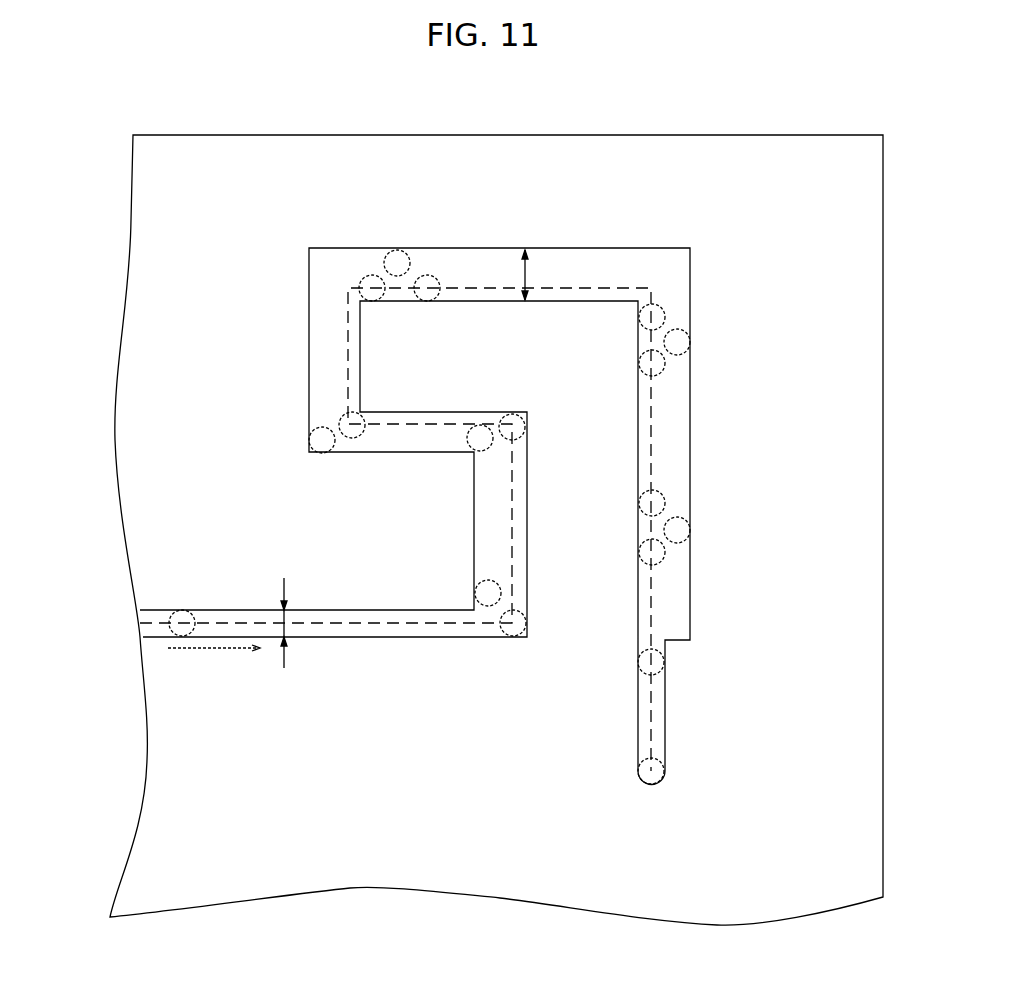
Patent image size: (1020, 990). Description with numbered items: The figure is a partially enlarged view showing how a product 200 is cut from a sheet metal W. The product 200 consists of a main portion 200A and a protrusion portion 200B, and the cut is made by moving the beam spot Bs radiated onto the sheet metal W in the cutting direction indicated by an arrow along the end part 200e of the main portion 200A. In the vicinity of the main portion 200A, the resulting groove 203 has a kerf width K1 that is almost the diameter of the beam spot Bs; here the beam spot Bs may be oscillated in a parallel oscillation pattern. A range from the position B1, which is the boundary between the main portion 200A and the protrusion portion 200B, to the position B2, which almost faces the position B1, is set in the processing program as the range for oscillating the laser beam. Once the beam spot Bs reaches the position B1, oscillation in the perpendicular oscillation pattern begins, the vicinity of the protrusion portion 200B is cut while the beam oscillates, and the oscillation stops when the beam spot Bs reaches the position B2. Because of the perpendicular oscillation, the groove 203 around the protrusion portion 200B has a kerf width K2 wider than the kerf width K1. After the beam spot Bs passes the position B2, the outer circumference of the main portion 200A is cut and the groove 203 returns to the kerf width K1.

The sheet metal W is at (652, 135).
The product 200 is at (170, 780).
The main portion 200A is at (170, 693).
The protrusion portion 200B is at (590, 420).
The end part 200e is at (240, 635).
The groove 203 is at (308, 609).
The kerf width K1 is at (243, 623).
The kerf width K2 is at (540, 275).
The position B1 is at (530, 634).
The position B2 is at (690, 637).
The beam spot Bs is at (388, 284).